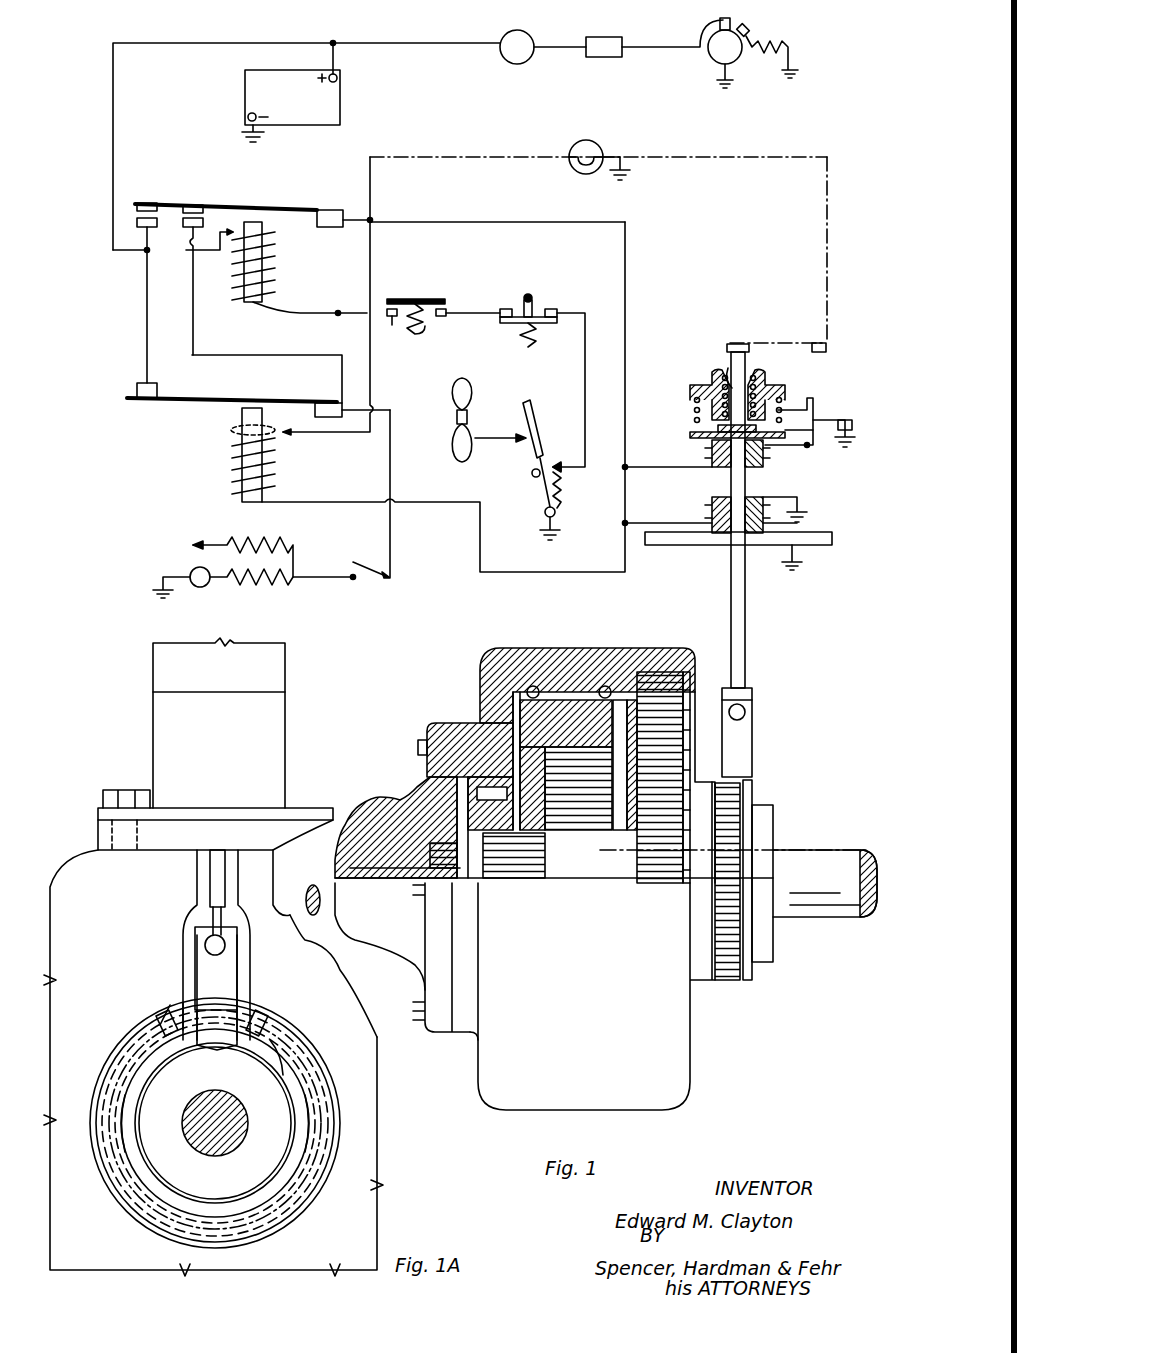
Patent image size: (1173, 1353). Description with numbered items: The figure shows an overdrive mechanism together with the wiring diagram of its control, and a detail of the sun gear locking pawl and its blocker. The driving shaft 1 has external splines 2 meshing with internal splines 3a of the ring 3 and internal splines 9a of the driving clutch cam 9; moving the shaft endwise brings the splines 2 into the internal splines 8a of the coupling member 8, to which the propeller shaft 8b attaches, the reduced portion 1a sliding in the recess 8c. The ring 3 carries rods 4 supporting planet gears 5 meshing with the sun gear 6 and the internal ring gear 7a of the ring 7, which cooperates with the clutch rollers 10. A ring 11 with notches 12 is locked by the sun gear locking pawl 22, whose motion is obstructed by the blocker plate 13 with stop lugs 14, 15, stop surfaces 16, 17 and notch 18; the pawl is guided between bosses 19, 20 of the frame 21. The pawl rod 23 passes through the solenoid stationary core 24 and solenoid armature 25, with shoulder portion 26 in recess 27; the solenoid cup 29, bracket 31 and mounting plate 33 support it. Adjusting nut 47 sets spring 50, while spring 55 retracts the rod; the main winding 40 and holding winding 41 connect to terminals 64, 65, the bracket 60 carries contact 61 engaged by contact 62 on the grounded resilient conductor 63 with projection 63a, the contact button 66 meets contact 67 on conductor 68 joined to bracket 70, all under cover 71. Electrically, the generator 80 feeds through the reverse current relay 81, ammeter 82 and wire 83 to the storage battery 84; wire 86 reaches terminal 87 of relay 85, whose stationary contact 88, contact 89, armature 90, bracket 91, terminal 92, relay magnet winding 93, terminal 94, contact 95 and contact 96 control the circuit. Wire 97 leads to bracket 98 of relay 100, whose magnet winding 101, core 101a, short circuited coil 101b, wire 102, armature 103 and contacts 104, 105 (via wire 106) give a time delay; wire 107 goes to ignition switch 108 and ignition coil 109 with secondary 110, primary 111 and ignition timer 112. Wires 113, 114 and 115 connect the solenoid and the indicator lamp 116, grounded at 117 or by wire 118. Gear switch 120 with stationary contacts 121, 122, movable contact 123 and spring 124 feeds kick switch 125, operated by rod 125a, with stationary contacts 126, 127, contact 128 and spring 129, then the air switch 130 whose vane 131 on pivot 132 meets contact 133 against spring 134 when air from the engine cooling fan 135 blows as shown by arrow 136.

In FIG. 1, the driving shaft 1 is at (810, 917).
In FIG. 1A, the driving shaft 1 is at (207, 1150).
In FIG. 1, the reduced portion 1a is at (408, 888).
In FIG. 1, the external splines 2 is at (545, 865).
In FIG. 1, the ring 3 is at (545, 773).
In FIG. 1, the internal splines 3a is at (548, 815).
In FIG. 1, the rods 4 is at (620, 700).
In FIG. 1, the planet gear 5 is at (660, 672).
In FIG. 1, the sun gear 6 is at (660, 883).
In FIG. 1, the ring 7 is at (561, 650).
In FIG. 1, the internal ring gear 7a is at (700, 667).
In FIG. 1, the coupling member 8 is at (365, 945).
In FIG. 1A, the coupling member 8 is at (312, 911).
In FIG. 1, the internal splines 8a is at (413, 807).
In FIG. 1, the propeller shaft 8b is at (312, 916).
In FIG. 1A, the propeller shaft 8b is at (312, 932).
In FIG. 1, the recess 8c is at (372, 888).
In FIG. 1, the driving clutch cam 9 is at (536, 800).
In FIG. 1, the internal splines 9a is at (460, 787).
In FIG. 1, the clutch rollers 10 is at (470, 788).
In FIG. 1, the ring 11 is at (742, 835).
In FIG. 1A, the ring 11 is at (145, 1210).
In FIG. 1A, the notches 12 is at (118, 1180).
In FIG. 1, the blocker plate 13 is at (752, 792).
In FIG. 1A, the blocker plate 13 is at (300, 1113).
In FIG. 1A, the stop lug 14 is at (162, 1012).
In FIG. 1A, the stop lug 15 is at (285, 1028).
In FIG. 1A, the stop surface 16 is at (178, 1000).
In FIG. 1A, the stop surface 17 is at (265, 1015).
In FIG. 1A, the notch 18 is at (215, 1048).
In FIG. 1A, the boss 19 is at (182, 970).
In FIG. 1A, the boss 20 is at (242, 973).
In FIG. 1A, the frame 21 is at (75, 870).
In FIG. 1, the sun gear locking pawl 22 is at (753, 742).
In FIG. 1A, the sun gear locking pawl 22 is at (232, 940).
In FIG. 1, the pawl rod 23 is at (730, 558).
In FIG. 1A, the pawl rod 23 is at (208, 880).
In FIG. 1, the solenoid stationary core 24 is at (720, 495).
In FIG. 1, the solenoid armature 25 is at (700, 443).
In FIG. 1, the shoulder portion 26 is at (718, 428).
In FIG. 1, the recess 27 is at (720, 365).
In FIG. 1A, the solenoid cup 29 is at (152, 736).
In FIG. 1A, the bracket 31 is at (98, 831).
In FIG. 1, the mounting plate 33 is at (833, 543).
In FIG. 1A, the mounting plate 33 is at (98, 795).
In FIG. 1, the solenoid magnet winding 40 is at (765, 463).
In FIG. 1, the winding 41 is at (798, 523).
In FIG. 1, the adjusting nut 47 is at (748, 350).
In FIG. 1, the spring 50 is at (705, 374).
In FIG. 1, the spring 55 is at (690, 400).
In FIG. 1, the bracket 60 is at (815, 400).
In FIG. 1, the contact 61 is at (800, 410).
In FIG. 1, the contact 62 is at (789, 433).
In FIG. 1, the resilient conductor 63 is at (828, 417).
In FIG. 1, the projection 63a is at (787, 405).
In FIG. 1, the insulated terminal 64 is at (625, 468).
In FIG. 1, the insulated terminal 65 is at (628, 520).
In FIG. 1, the contact button 66 is at (730, 345).
In FIG. 1, the contact 67 is at (730, 342).
In FIG. 1, the resilient conductor 68 is at (766, 342).
In FIG. 1, the bracket 70 is at (826, 346).
In FIG. 1A, the cover 71 is at (152, 665).
In FIG. 1, the generator 80 is at (712, 56).
In FIG. 1, the reverse current relay 81 is at (610, 37).
In FIG. 1, the ammeter 82 is at (512, 32).
In FIG. 1, the wire 83 is at (336, 52).
In FIG. 1, the storage battery 84 is at (244, 76).
In FIG. 1, the relay 85 is at (226, 187).
In FIG. 1, the wire 86 is at (113, 90).
In FIG. 1, the terminal 87 is at (145, 251).
In FIG. 1, the stationary contact 88 is at (142, 228).
In FIG. 1, the contact 89 is at (130, 204).
In FIG. 1, the armature 90 is at (165, 200).
In FIG. 1, the bracket 91 is at (330, 210).
In FIG. 1, the terminal 92 is at (372, 220).
In FIG. 1, the relay magnet winding 93 is at (265, 248).
In FIG. 1, the terminal 94 is at (338, 311).
In FIG. 1, the contact 95 is at (196, 205).
In FIG. 1, the contact 96 is at (186, 230).
In FIG. 1, the wire 97 is at (192, 318).
In FIG. 1, the bracket 98 is at (328, 402).
In FIG. 1, the relay 100 is at (151, 460).
In FIG. 1, the magnet winding 101 is at (264, 458).
In FIG. 1, the core 101a is at (245, 502).
In FIG. 1, the short circuited coil 101b is at (232, 428).
In FIG. 1, the wire 102 is at (368, 378).
In FIG. 1, the armature 103 is at (222, 400).
In FIG. 1, the contact 104 is at (126, 396).
In FIG. 1, the contact 105 is at (136, 383).
In FIG. 1, the wire 106 is at (147, 316).
In FIG. 1, the wire 107 is at (390, 467).
In FIG. 1, the ignition switch 108 is at (367, 552).
In FIG. 1, the ignition coil 109 is at (318, 553).
In FIG. 1, the secondary 110 is at (268, 543).
In FIG. 1, the primary 111 is at (272, 584).
In FIG. 1, the ignition timer 112 is at (200, 588).
In FIG. 1, the wire 113 is at (447, 503).
In FIG. 1, the wire 114 is at (626, 262).
In FIG. 1, the wire 115 is at (467, 155).
In FIG. 1, the indicator lamp 116 is at (588, 141).
In FIG. 1, the ground 117 is at (612, 175).
In FIG. 1, the wire 118 is at (760, 158).
In FIG. 1, the gear switch 120 is at (421, 261).
In FIG. 1, the stationary contact 121 is at (392, 326).
In FIG. 1, the stationary contact 122 is at (441, 317).
In FIG. 1, the movable contact 123 is at (416, 288).
In FIG. 1, the spring 124 is at (418, 338).
In FIG. 1, the kick switch 125 is at (528, 286).
In FIG. 1, the switch actuating rod 125a is at (541, 298).
In FIG. 1, the stationary contact 126 is at (505, 309).
In FIG. 1, the stationary contact 127 is at (557, 308).
In FIG. 1, the contact 128 is at (540, 323).
In FIG. 1, the spring 129 is at (526, 337).
In FIG. 1, the air switch 130 is at (494, 462).
In FIG. 1, the vane 131 is at (531, 412).
In FIG. 1, the pivot 132 is at (545, 512).
In FIG. 1, the contact 133 is at (560, 462).
In FIG. 1, the spring 134 is at (560, 504).
In FIG. 1, the engine cooling fan 135 is at (456, 405).
In FIG. 1, the arrow 136 is at (491, 437).